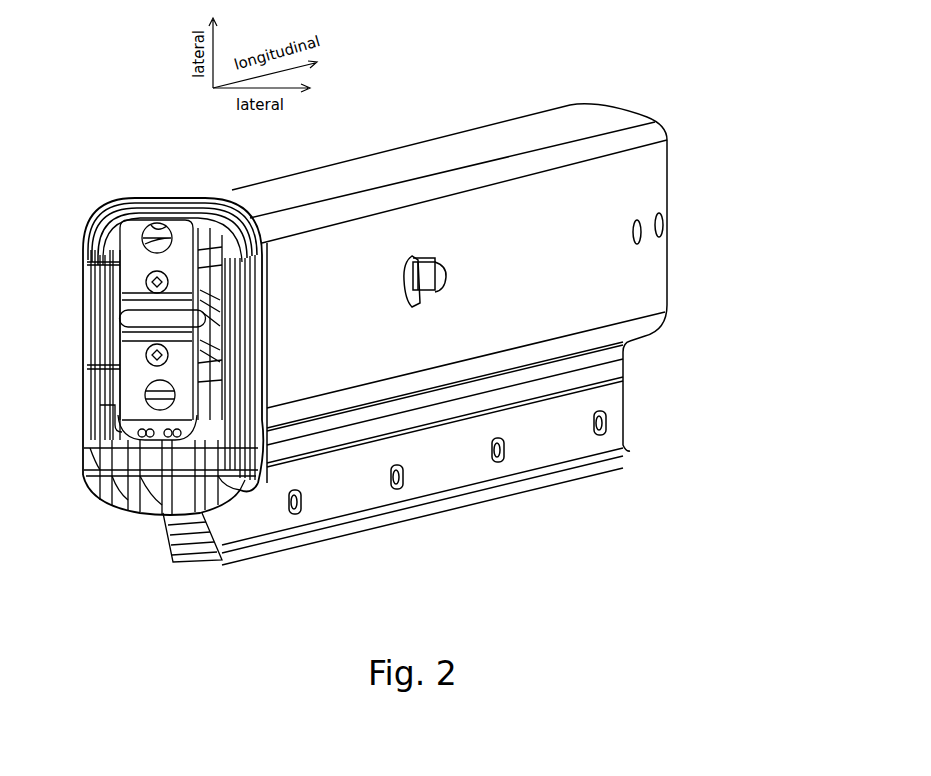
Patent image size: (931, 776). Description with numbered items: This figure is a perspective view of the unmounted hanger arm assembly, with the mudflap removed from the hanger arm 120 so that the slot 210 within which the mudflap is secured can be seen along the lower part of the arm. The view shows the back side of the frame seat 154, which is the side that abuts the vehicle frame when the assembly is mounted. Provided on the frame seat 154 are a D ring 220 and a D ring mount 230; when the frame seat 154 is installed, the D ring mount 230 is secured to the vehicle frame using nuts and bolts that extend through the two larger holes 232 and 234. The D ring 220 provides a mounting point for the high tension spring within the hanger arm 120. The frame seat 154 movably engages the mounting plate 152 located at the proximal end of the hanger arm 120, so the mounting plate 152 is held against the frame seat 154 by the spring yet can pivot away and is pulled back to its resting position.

The hanger arm 120 is at (450, 134).
The mounting plate 152 is at (222, 203).
The frame seat 154 is at (133, 203).
The slot 210 is at (210, 547).
The D ring 220 is at (118, 313).
The D ring mount 230 is at (97, 405).
The larger hole 232 is at (97, 224).
The larger hole 234 is at (92, 443).